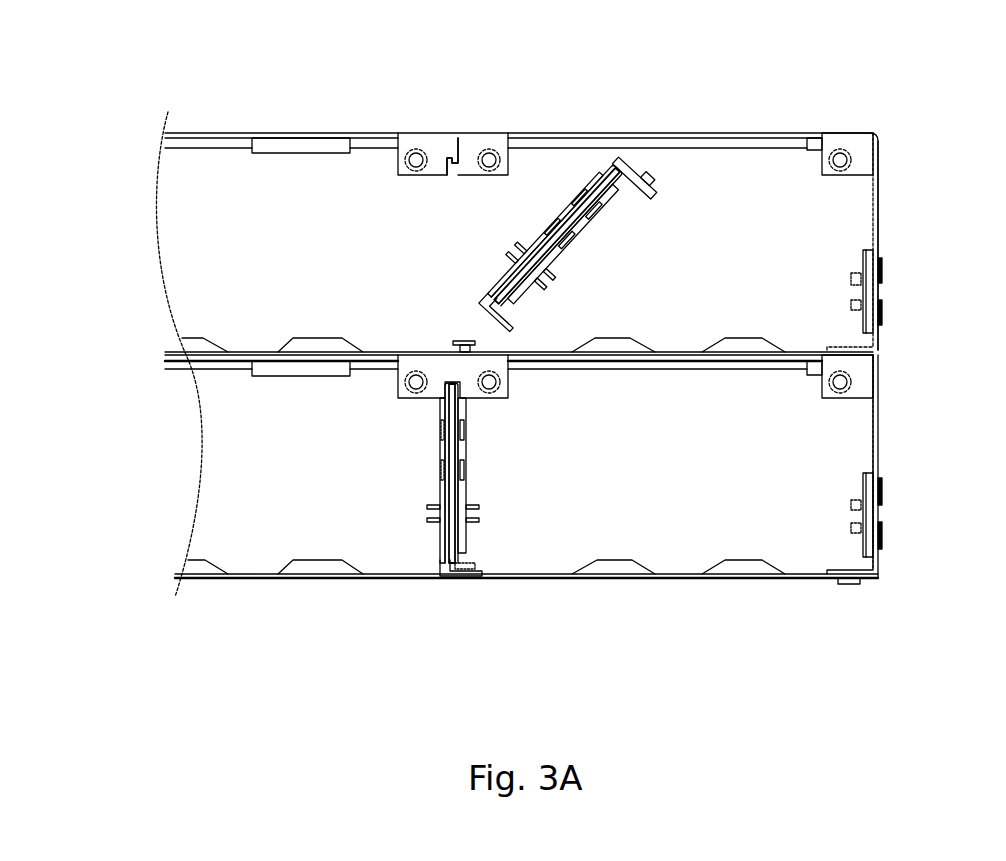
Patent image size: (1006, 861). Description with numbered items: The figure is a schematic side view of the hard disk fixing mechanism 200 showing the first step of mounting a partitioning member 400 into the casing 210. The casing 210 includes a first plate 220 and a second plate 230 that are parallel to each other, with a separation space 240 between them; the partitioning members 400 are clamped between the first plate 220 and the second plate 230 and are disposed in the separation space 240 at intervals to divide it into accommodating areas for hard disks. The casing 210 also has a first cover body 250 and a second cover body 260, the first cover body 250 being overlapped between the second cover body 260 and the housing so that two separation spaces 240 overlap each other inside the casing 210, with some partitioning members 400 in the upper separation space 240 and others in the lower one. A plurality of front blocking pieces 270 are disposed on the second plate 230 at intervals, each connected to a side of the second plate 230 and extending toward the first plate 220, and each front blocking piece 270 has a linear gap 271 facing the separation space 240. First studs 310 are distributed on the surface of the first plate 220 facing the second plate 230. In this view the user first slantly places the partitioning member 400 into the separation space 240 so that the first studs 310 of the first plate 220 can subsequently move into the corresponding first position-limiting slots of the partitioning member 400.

The hard disk fixing mechanism 200 is at (606, 672).
The casing 210 is at (581, 594).
The first plate 220 is at (195, 352).
The second plate 230 is at (199, 133).
The separation space 240 is at (178, 241).
The first cover body 250 is at (893, 443).
The second cover body 260 is at (893, 231).
The front blocking piece 270 is at (412, 145).
The linear gap 271 is at (461, 148).
The first stud 310 is at (455, 341).
The partitioning member 400 is at (632, 148).